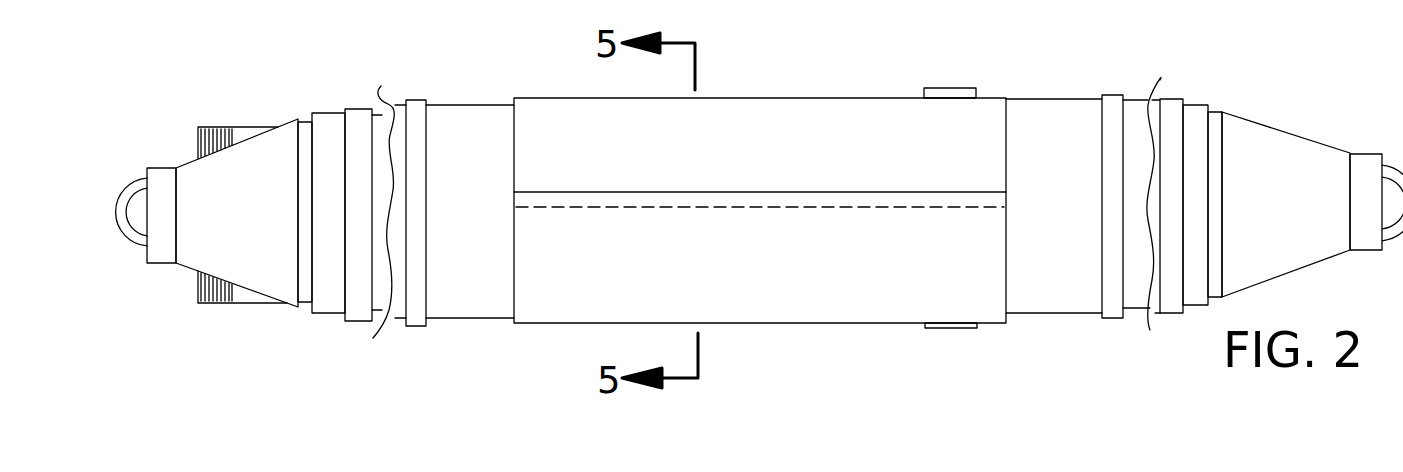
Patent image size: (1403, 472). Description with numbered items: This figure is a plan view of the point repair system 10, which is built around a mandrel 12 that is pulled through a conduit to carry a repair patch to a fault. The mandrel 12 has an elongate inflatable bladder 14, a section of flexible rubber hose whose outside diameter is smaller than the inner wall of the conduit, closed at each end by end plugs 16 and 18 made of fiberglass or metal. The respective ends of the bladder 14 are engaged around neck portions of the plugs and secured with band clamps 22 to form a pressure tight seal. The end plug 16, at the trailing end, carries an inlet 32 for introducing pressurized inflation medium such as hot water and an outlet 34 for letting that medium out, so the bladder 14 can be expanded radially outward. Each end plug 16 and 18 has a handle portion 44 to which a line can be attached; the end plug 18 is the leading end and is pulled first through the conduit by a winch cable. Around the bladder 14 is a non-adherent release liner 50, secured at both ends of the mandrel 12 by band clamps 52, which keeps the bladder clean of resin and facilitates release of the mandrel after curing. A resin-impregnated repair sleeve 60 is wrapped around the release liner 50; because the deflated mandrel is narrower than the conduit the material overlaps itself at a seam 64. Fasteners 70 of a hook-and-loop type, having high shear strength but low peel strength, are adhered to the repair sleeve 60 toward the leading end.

The point repair system 10 is at (525, 30).
The mandrel 12 is at (276, 72).
The elongate inflatable bladder 14 is at (325, 113).
The end plug 16 is at (289, 306).
The end plug 18 is at (1261, 125).
The band clamps 22 is at (356, 108).
The inlet 32 is at (218, 126).
The outlet 34 is at (215, 303).
The handle portion 44 is at (124, 185).
The release liner 50 is at (478, 105).
The band clamps 52 is at (415, 327).
The resin-impregnated repair sleeve 60 is at (769, 97).
The seam 64 is at (580, 218).
The fasteners 70 is at (945, 88).